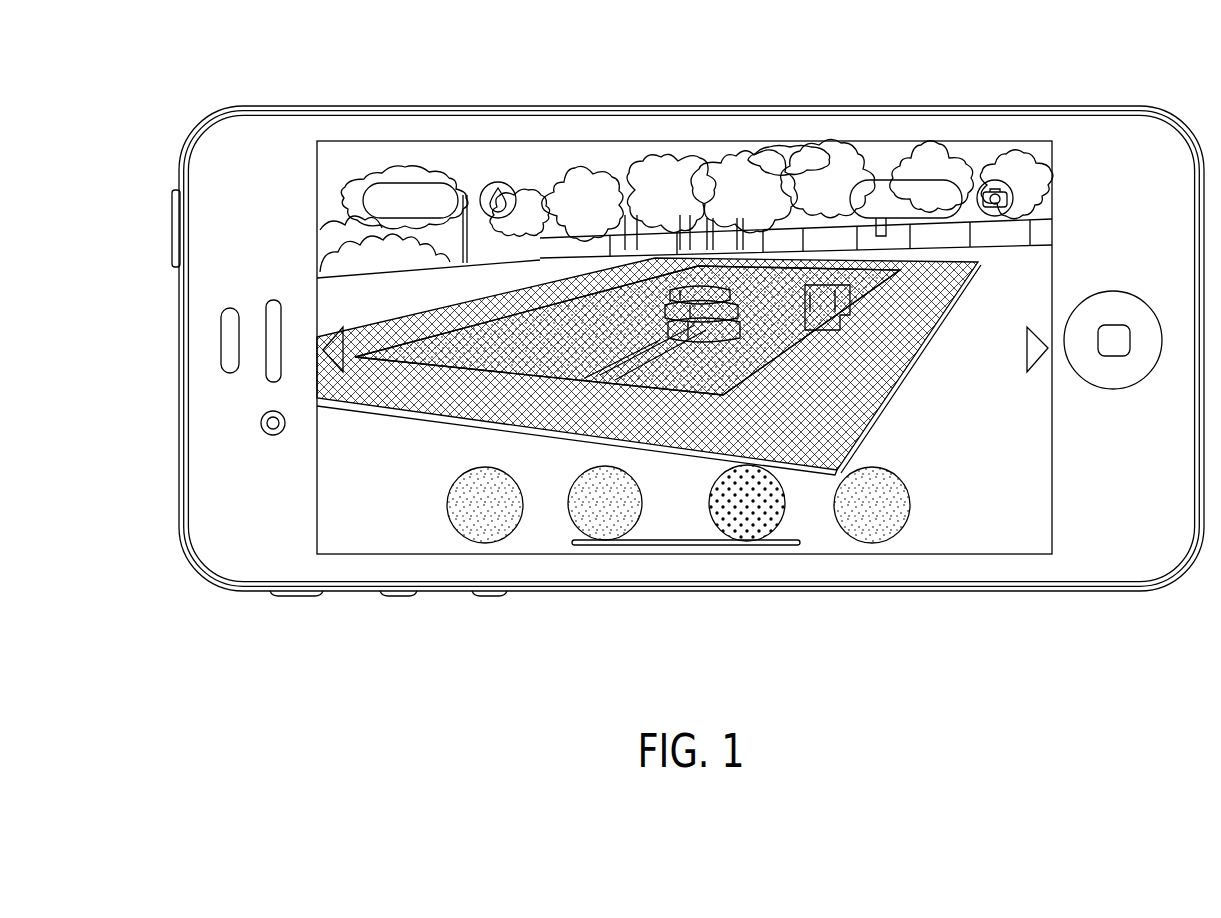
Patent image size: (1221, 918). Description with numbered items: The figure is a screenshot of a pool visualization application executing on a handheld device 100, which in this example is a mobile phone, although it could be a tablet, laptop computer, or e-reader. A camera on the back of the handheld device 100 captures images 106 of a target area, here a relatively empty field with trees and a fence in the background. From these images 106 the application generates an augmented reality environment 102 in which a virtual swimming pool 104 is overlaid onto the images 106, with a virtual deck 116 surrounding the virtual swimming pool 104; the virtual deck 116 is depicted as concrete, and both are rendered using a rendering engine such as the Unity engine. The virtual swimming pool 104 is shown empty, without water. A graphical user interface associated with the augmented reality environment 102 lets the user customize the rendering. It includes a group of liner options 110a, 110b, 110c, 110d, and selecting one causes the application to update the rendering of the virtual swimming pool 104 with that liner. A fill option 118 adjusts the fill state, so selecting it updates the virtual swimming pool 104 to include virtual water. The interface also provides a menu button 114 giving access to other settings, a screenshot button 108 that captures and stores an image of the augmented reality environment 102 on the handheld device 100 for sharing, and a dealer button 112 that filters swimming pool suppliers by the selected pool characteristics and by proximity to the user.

The handheld device 100 is at (1177, 120).
The augmented reality environment 102 is at (988, 512).
The virtual swimming pool 104 is at (450, 350).
The images 106 is at (785, 178).
The screenshot button 108 is at (993, 180).
The liner option 110a is at (485, 518).
The liner option 110b is at (603, 517).
The liner option 110c is at (748, 517).
The liner option 110d is at (870, 518).
The dealer button 112 is at (905, 180).
The menu button 114 is at (410, 182).
The virtual deck 116 is at (317, 378).
The fill option 118 is at (497, 182).